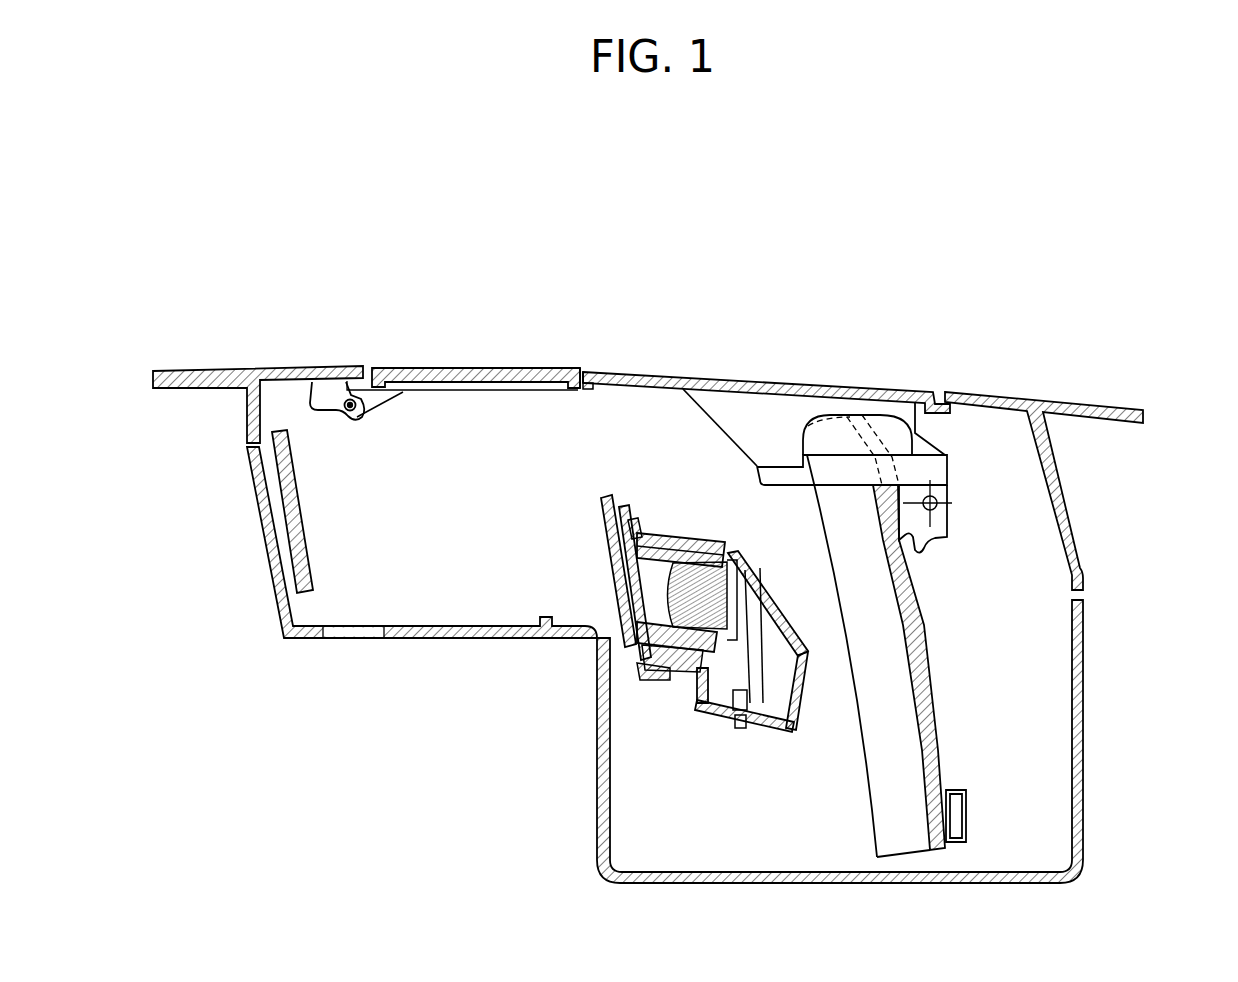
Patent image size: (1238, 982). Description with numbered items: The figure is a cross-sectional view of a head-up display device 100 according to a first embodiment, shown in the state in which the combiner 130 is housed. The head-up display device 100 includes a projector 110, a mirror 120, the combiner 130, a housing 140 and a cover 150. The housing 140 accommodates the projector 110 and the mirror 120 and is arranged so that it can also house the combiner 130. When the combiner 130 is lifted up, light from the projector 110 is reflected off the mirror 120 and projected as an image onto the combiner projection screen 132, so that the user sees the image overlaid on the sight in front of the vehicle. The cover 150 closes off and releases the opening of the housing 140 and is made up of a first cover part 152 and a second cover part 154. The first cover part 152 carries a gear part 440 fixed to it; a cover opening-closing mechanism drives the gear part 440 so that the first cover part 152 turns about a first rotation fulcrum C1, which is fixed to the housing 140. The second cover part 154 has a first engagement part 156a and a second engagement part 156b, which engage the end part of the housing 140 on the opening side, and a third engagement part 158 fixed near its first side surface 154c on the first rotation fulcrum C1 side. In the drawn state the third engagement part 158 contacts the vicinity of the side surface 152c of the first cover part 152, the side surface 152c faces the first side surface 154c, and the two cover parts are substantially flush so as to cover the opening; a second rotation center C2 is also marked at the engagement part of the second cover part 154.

The head-up display device 100 is at (442, 759).
The projector 110 is at (695, 688).
The mirror 120 is at (314, 495).
The combiner 130 is at (918, 583).
The combiner projection screen 132 is at (928, 805).
The housing 140 is at (1086, 657).
The cover 150 is at (698, 315).
The first cover part 152 is at (676, 373).
The side surface 152c is at (586, 380).
The second cover part 154 is at (478, 366).
The first side surface 154c is at (577, 380).
The first engagement part 156a is at (320, 385).
The second engagement part 156b is at (380, 404).
The third engagement part 158 is at (590, 391).
The gear part 440 is at (908, 497).
The first rotation fulcrum C1 is at (938, 501).
The rotation center of hinge C2 is at (360, 416).